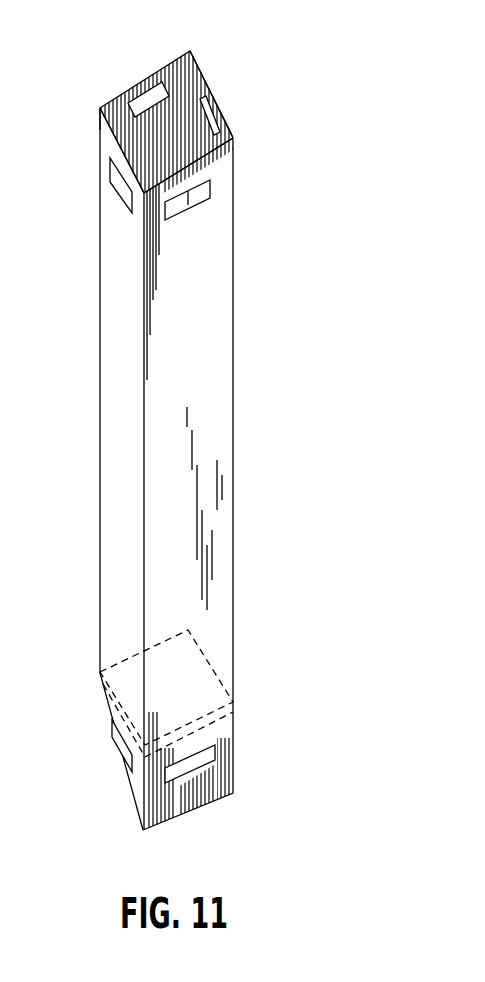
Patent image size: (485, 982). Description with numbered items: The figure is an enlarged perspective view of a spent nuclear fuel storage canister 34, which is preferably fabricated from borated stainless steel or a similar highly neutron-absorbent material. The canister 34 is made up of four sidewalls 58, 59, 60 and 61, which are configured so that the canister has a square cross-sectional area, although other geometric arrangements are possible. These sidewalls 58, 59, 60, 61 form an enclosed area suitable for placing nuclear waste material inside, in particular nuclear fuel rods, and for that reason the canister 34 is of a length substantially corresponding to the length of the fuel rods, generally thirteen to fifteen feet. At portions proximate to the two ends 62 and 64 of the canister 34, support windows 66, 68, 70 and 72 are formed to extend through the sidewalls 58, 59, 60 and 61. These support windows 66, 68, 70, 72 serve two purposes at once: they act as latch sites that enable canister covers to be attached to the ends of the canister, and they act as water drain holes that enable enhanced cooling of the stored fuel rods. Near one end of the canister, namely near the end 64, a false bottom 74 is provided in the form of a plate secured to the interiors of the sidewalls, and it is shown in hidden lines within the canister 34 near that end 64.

The spent nuclear fuel storage canister 34 is at (96, 459).
The sidewall 58 is at (230, 342).
The sidewall 59 is at (105, 254).
The sidewall 60 is at (160, 63).
The sidewall 61 is at (196, 62).
The end 62 is at (100, 110).
The end 64 is at (224, 793).
The support window 66 is at (205, 192).
The support window 68 is at (110, 173).
The support window 70 is at (146, 100).
The support window 72 is at (210, 105).
The false bottom 74 is at (222, 717).